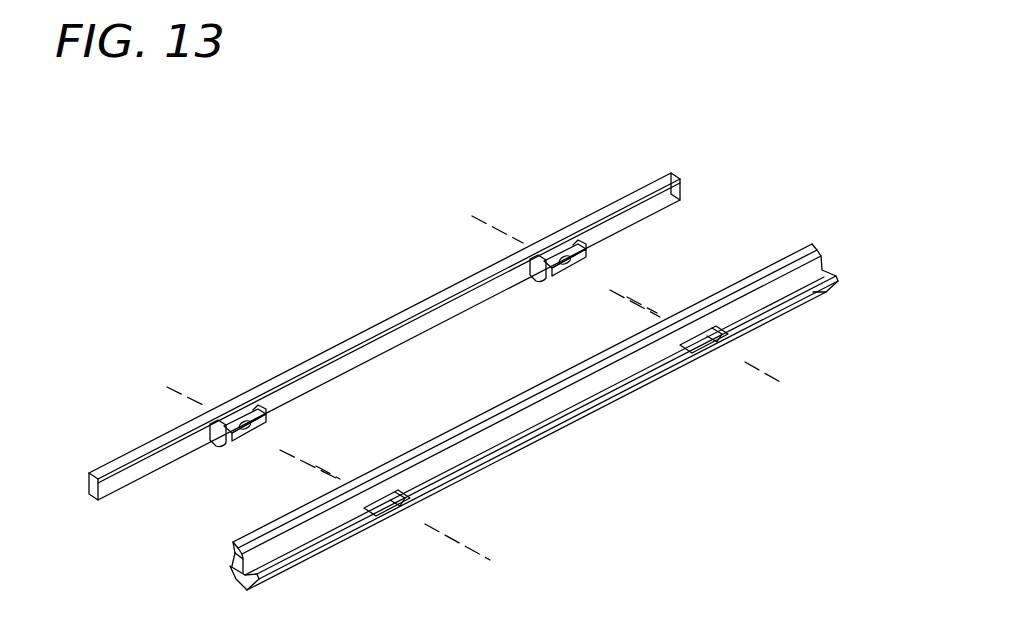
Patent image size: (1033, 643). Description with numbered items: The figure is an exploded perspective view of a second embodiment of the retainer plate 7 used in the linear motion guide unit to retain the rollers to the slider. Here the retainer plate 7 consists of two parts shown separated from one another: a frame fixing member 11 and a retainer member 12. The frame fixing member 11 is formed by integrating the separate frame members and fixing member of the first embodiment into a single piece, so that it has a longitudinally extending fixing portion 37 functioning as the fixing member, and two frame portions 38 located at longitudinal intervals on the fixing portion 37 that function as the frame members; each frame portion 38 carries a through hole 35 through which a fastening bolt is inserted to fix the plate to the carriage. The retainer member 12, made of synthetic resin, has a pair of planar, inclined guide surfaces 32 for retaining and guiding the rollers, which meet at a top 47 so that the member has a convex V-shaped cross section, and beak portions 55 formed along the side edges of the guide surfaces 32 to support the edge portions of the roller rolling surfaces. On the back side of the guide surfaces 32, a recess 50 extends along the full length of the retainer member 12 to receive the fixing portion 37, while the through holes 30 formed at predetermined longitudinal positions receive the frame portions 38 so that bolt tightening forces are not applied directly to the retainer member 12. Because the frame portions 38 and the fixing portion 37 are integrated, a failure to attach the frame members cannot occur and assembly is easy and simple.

The retainer plate 7 is at (712, 239).
The frame fixing member 11 is at (400, 310).
The retainer member 12 is at (578, 396).
The through hole 30 is at (384, 522).
The guide surface 32 is at (483, 452).
The through hole 35 is at (252, 428).
The fixing portion 37 is at (362, 355).
The frame portion 38 is at (227, 447).
The top 47 is at (643, 383).
The recess 50 is at (231, 561).
The beak portion 55 is at (522, 412).